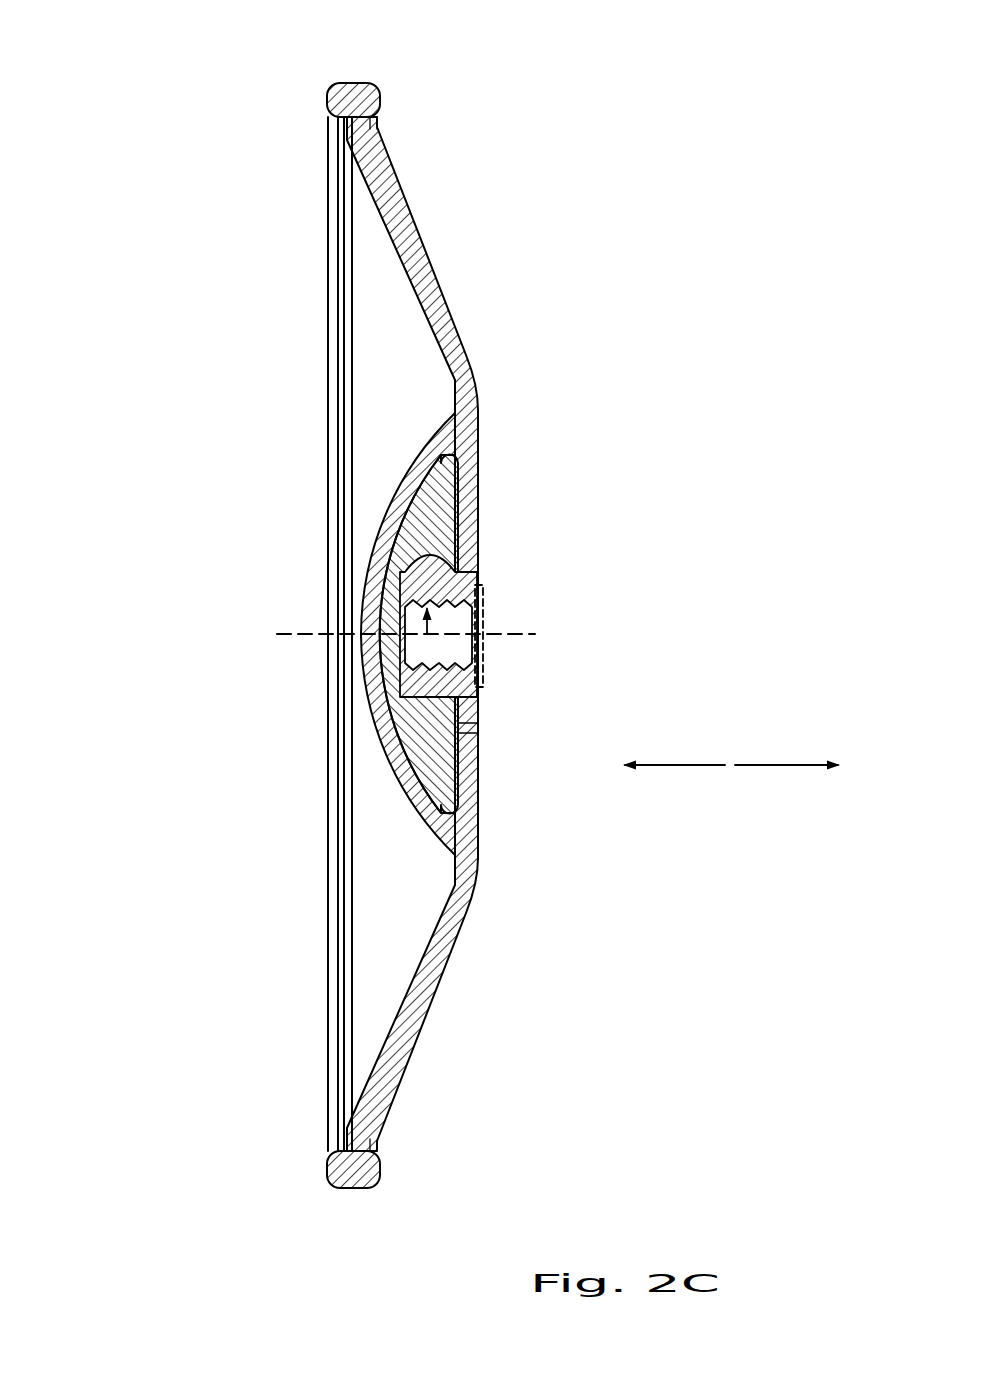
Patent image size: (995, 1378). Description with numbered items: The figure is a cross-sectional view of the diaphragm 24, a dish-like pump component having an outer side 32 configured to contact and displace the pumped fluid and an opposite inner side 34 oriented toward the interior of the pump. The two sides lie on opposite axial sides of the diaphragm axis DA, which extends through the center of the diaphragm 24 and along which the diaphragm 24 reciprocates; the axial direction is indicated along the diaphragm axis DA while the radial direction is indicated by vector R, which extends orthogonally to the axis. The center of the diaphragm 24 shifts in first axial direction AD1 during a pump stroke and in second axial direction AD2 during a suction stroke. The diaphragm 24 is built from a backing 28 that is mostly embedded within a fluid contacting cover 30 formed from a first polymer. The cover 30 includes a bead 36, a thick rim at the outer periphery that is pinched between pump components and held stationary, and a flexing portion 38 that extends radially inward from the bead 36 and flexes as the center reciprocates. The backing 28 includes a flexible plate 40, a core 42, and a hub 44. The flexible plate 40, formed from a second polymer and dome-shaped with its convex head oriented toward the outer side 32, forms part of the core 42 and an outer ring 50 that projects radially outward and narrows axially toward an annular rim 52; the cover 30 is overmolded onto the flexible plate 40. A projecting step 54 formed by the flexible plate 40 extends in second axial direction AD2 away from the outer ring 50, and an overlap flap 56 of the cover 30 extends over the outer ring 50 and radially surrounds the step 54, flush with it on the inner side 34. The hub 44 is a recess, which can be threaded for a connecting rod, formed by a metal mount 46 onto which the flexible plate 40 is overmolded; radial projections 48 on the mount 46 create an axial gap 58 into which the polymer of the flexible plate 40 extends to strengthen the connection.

The diaphragm 24 is at (140, 115).
The backing 28 is at (505, 539).
The cover 30 is at (492, 285).
The outer side 32 is at (368, 316).
The inner side 34 is at (440, 323).
The bead 36 is at (357, 92).
The flexing portion 38 is at (416, 258).
The flexible plate 40 is at (458, 500).
The core 42 is at (469, 735).
The hub 44 is at (470, 657).
The mount 46 is at (483, 590).
The projections 48 is at (430, 556).
The outer ring 50 is at (430, 507).
The annular rim 52 is at (477, 857).
The projecting step 54 is at (471, 707).
The overlap flap 56 is at (472, 510).
The axial gap 58 is at (429, 705).
The vector R is at (425, 620).
The diaphragm axis DA is at (292, 638).
The first axial direction AD1 is at (683, 766).
The second axial direction AD2 is at (795, 766).